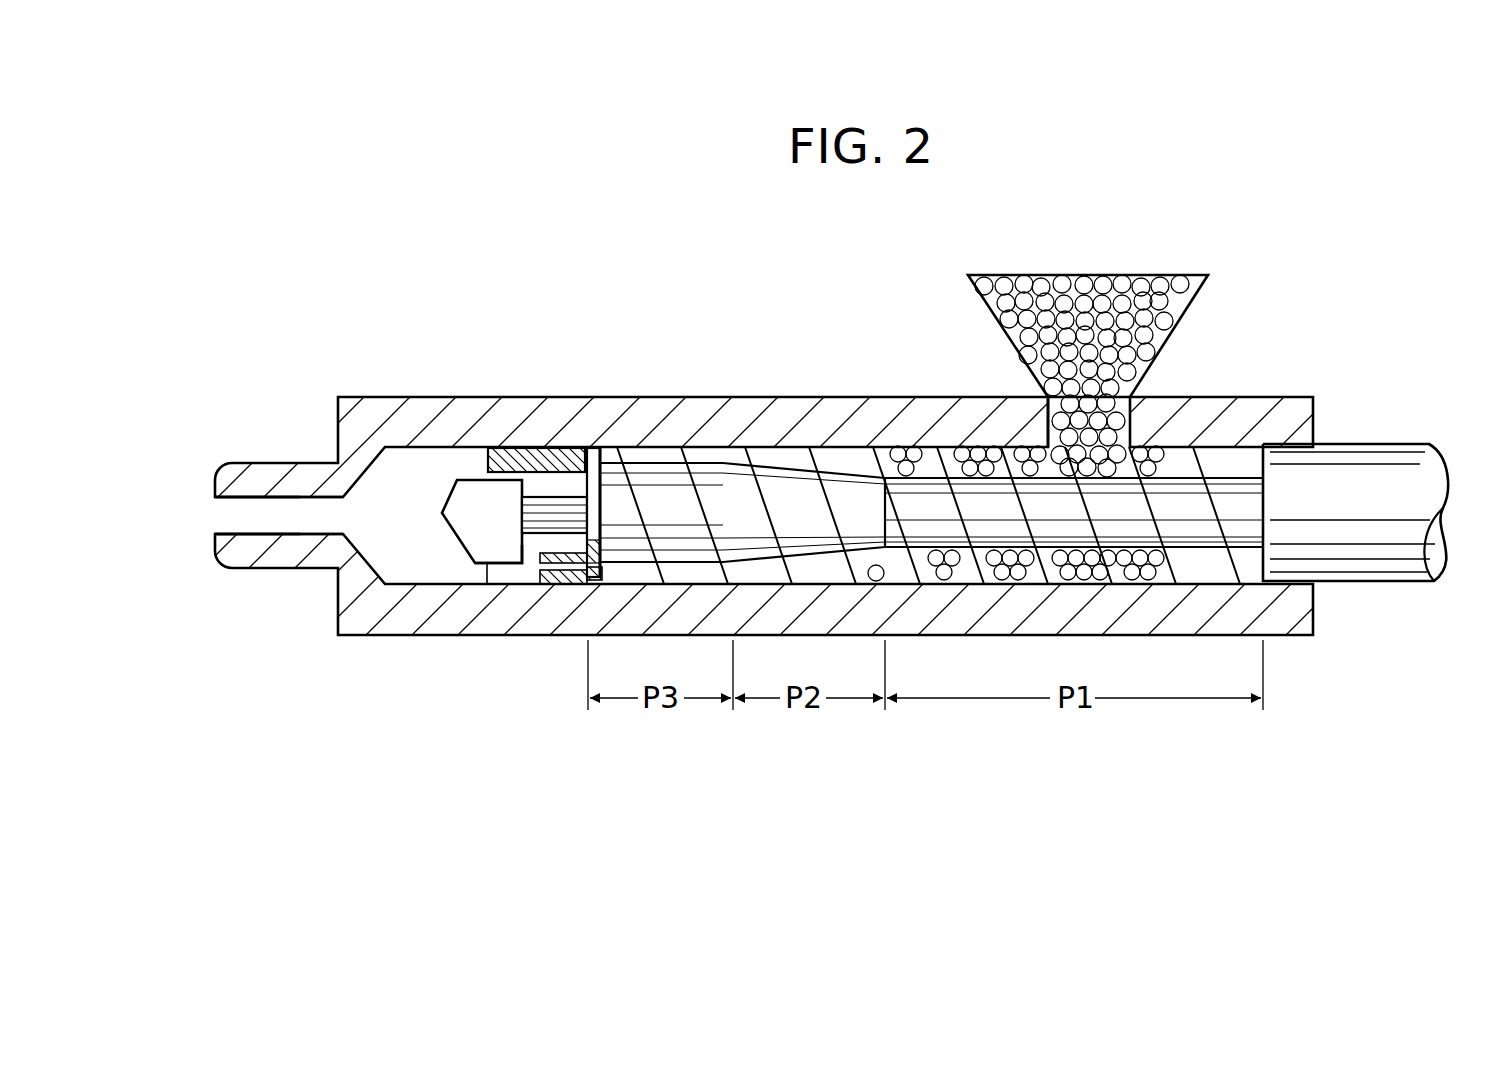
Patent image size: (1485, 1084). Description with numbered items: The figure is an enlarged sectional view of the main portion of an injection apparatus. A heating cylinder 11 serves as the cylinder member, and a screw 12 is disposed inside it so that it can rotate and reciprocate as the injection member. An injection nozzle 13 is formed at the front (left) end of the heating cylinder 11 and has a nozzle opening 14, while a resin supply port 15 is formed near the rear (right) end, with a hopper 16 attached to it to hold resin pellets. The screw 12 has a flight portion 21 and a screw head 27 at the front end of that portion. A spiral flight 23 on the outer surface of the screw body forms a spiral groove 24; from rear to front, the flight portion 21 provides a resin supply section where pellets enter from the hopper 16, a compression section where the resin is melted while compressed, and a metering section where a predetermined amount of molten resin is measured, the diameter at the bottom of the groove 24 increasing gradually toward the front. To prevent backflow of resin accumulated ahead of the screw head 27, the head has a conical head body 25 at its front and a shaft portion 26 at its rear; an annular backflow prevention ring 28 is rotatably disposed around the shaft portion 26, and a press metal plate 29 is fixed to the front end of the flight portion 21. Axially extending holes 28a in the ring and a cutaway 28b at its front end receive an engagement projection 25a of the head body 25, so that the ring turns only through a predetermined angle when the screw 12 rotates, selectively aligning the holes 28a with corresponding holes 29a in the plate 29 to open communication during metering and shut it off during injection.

The heating cylinder 11 is at (633, 396).
The screw 12 is at (1024, 420).
The injection nozzle 13 is at (297, 456).
The nozzle opening 14 is at (220, 512).
The resin supply port 15 is at (1133, 395).
The hopper 16 is at (1200, 300).
The flight portion 21 is at (905, 569).
The flight 23 is at (761, 455).
The groove 24 is at (793, 458).
The head body 25 is at (471, 500).
The engagement projection 25a is at (507, 553).
The shaft portion 26 is at (535, 508).
The screw head 27 is at (488, 458).
The backflow prevention ring 28 is at (543, 456).
The hole 28a is at (563, 575).
The cutaway 28b is at (530, 572).
The press metal plate 29 is at (594, 460).
The hole 29a is at (598, 583).